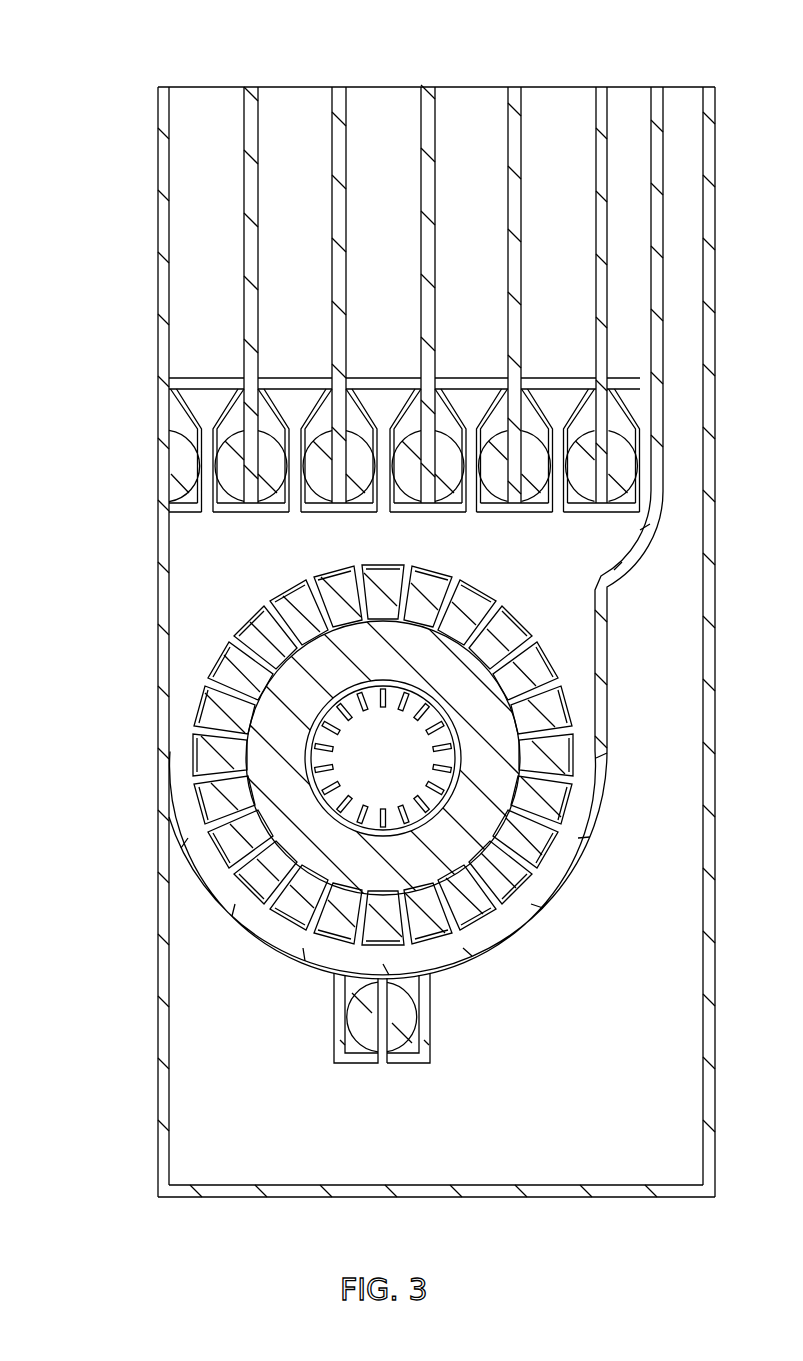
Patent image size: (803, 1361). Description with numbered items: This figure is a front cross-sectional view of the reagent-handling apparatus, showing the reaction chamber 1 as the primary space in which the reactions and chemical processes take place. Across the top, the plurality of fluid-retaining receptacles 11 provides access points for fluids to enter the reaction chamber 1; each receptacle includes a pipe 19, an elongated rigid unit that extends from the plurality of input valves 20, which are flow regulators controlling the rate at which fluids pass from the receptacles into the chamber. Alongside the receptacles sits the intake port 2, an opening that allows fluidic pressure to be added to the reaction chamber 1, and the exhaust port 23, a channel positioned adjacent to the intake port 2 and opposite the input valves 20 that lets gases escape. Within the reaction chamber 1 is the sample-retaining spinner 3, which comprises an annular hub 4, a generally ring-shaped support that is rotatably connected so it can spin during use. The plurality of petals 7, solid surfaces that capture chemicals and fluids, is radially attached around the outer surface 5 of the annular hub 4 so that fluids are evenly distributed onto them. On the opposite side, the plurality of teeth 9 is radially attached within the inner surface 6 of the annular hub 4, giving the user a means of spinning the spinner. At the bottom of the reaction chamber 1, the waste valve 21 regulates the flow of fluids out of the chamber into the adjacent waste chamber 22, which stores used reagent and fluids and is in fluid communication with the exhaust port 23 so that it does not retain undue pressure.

The reaction chamber 1 is at (249, 574).
The intake port 2 is at (640, 100).
The sample-retaining spinner 3 is at (184, 671).
The annular hub 4 is at (277, 782).
The outer surface 5 is at (503, 793).
The inner surface 6 is at (375, 703).
The plurality of petals 7 is at (463, 605).
The plurality of teeth 9 is at (330, 748).
The plurality of fluid-retaining receptacles 11 is at (146, 44).
The pipe 19 is at (215, 108).
The plurality of input valves 20 is at (185, 470).
The waste valve 21 is at (408, 1028).
The waste chamber 22 is at (229, 999).
The exhaust port 23 is at (692, 100).